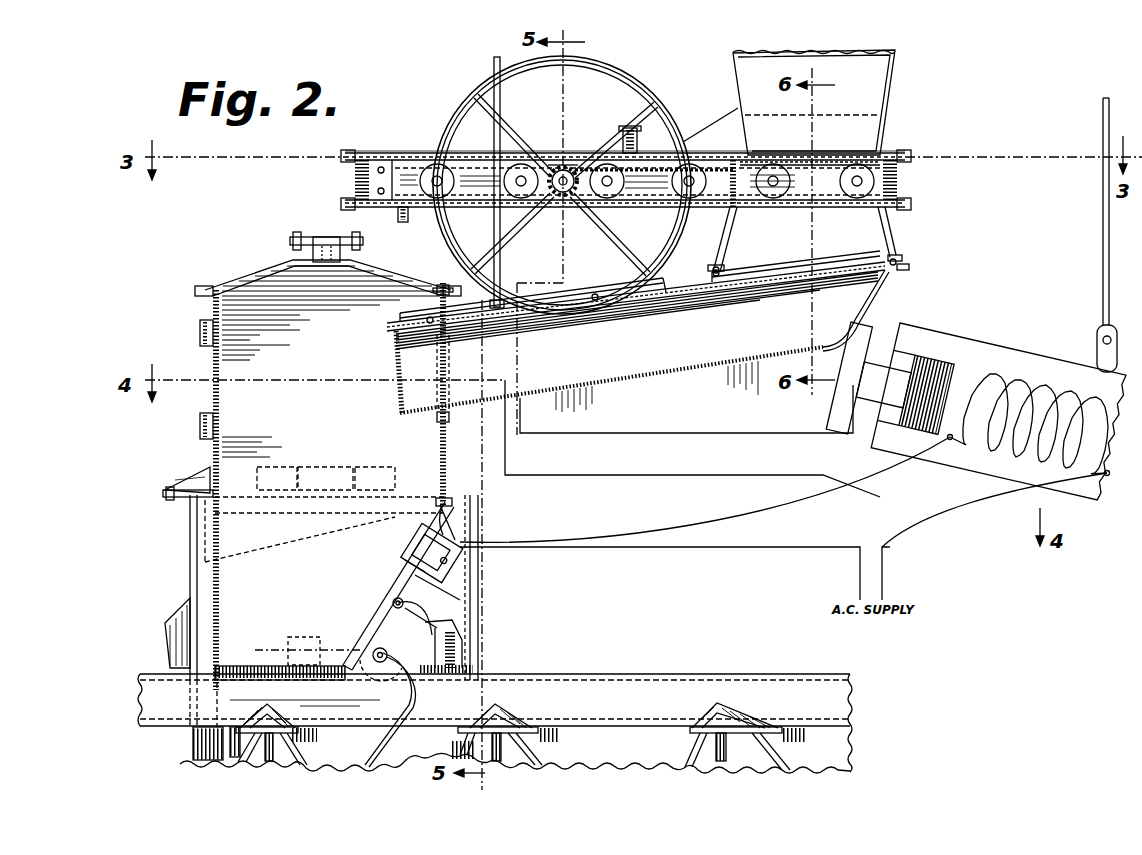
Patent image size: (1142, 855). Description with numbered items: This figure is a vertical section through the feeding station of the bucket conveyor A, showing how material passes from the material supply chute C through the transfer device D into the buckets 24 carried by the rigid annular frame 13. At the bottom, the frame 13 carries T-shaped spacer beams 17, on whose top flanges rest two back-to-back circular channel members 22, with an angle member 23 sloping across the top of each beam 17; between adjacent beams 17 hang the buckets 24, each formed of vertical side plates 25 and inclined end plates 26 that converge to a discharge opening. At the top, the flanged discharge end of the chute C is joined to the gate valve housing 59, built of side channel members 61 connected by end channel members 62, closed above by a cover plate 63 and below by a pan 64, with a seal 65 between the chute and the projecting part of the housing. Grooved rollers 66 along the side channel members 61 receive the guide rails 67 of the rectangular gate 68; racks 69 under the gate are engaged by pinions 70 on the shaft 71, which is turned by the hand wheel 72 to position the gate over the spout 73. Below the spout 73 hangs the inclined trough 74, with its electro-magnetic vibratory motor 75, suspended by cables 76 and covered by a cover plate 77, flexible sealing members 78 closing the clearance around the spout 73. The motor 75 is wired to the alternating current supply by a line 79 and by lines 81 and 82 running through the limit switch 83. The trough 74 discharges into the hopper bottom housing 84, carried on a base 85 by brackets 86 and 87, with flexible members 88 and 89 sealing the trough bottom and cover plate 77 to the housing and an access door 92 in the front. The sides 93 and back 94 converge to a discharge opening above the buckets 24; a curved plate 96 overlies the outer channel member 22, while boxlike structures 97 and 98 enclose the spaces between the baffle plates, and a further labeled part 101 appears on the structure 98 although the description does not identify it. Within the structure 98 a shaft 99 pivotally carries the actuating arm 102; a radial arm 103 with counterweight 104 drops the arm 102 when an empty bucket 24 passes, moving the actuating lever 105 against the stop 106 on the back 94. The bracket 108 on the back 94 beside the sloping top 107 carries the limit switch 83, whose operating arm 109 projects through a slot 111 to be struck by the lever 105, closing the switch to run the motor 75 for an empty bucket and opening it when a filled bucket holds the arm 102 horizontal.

The rigid annular frame 13 is at (637, 670).
The spacer beam 17 is at (700, 742).
The circular channel member 22 is at (700, 676).
The angle member 23 is at (262, 714).
The bucket 24 is at (420, 735).
The side plate 25 is at (618, 713).
The end plate 26 is at (300, 740).
The gate valve housing 59 is at (574, 158).
The side channel member 61 is at (471, 204).
The end channel member 62 is at (352, 178).
The cover plate 63 is at (406, 153).
The pan 64 is at (408, 212).
The seal 65 is at (724, 208).
The grooved roller 66 is at (503, 181).
The guide rail 67 is at (755, 165).
The rectangular gate 68 is at (823, 158).
The rack 69 is at (645, 167).
The pinion 70 is at (568, 196).
The shaft 71 is at (558, 162).
The hand wheel 72 is at (597, 70).
The spout 73 is at (878, 236).
The trough 74 is at (704, 380).
The electro-magnetic vibratory motor 75 is at (972, 338).
The cable 76 is at (491, 78).
The cover plate 77 is at (594, 294).
The flexible sealing member 78 is at (896, 256).
The line 79 is at (950, 533).
The line 81 is at (705, 548).
The line 82 is at (731, 527).
The limit switch 83 is at (456, 550).
The hopper bottom housing 84 is at (262, 283).
The base 85 is at (189, 575).
The bracket 86 is at (330, 470).
The bracket 87 is at (188, 477).
The flexible member 88 is at (439, 453).
The flexible member 89 is at (435, 290).
The access door 92 is at (203, 353).
The side 93 is at (320, 586).
The back 94 is at (426, 549).
The curved plate 96 is at (216, 668).
The boxlike structure 97 is at (165, 636).
The boxlike structure 98 is at (450, 610).
The shaft 99 is at (374, 648).
The plate 101 is at (440, 622).
The actuating arm 102 is at (375, 720).
The radial arm 103 is at (325, 642).
The counterweight 104 is at (271, 634).
The actuating lever 105 is at (396, 600).
The stop 106 is at (378, 622).
The sloping top 107 is at (455, 580).
The bracket 108 is at (424, 537).
The operating arm 109 is at (416, 567).
The slot 111 is at (422, 622).
The conveyor A is at (795, 670).
The material supply chute C is at (893, 97).
The device D is at (646, 366).